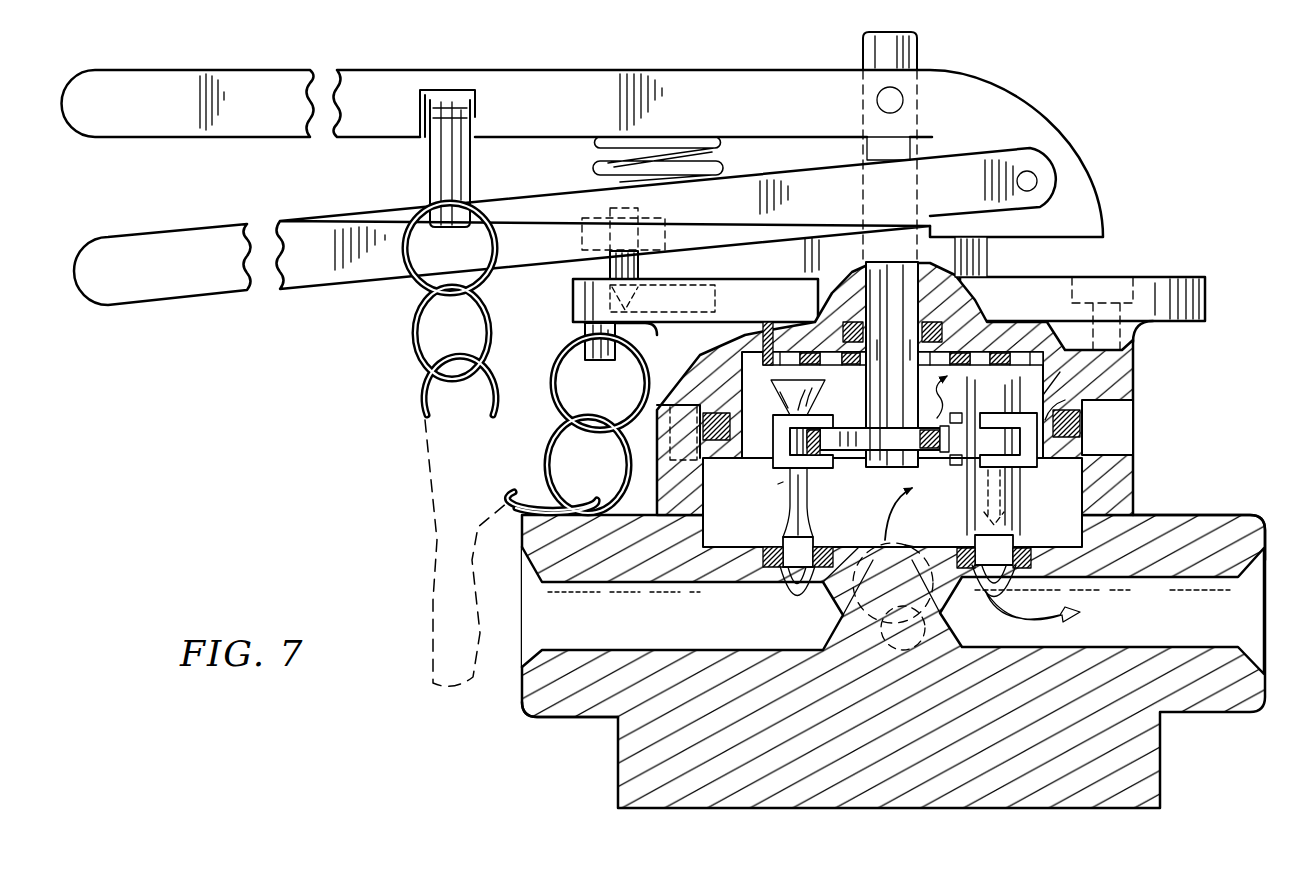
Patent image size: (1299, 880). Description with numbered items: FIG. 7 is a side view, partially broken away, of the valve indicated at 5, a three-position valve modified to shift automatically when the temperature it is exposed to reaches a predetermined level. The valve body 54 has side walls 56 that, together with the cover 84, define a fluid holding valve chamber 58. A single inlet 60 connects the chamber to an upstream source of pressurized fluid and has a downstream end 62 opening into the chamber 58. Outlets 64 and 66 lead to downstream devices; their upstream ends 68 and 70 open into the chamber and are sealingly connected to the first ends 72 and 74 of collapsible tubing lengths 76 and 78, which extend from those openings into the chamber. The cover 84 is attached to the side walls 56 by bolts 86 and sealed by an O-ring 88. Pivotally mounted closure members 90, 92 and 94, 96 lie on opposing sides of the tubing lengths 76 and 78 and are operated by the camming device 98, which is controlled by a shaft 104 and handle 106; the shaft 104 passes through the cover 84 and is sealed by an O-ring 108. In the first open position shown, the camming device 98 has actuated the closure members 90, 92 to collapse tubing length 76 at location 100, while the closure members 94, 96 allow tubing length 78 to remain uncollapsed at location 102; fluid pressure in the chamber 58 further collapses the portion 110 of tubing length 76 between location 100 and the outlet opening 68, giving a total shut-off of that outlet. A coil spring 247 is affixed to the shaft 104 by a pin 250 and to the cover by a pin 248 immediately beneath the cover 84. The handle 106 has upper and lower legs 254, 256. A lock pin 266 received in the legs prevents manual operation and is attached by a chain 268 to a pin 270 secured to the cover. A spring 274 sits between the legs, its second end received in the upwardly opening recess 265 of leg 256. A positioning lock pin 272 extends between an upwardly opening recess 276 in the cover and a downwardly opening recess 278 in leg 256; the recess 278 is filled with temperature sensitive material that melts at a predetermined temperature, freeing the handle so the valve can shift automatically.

The hydraulic assembly 5 is at (1252, 752).
The valve body 54 is at (618, 762).
The side walls 56 is at (1125, 470).
The valve chamber 58 is at (873, 470).
The inlet 60 is at (925, 645).
The downstream end 62 is at (905, 545).
The outlet 64 is at (554, 715).
The outlet 66 is at (1222, 517).
The upstream end 68 is at (795, 577).
The upstream end 70 is at (975, 588).
The first end 72 is at (830, 552).
The first end 74 is at (1028, 548).
The collapsible tubing length 76 is at (783, 527).
The collapsible tubing length 78 is at (1020, 502).
The cover 84 is at (1040, 280).
The bolts 86 is at (1126, 280).
The O-ring 88 is at (1082, 425).
The closure member 90 is at (808, 466).
The closure member 92 is at (774, 463).
The closure member 94 is at (945, 458).
The closure member 96 is at (1068, 398).
The camming device 98 is at (866, 487).
The location 100 is at (785, 437).
The location 102 is at (1028, 465).
The shaft 104 is at (917, 48).
The handle 106 is at (226, 58).
The O-ring 108 is at (962, 312).
The portion 110 is at (778, 484).
The coil spring 247 is at (1045, 360).
The pin 248 is at (752, 324).
The pin 250 is at (876, 340).
The upper leg 254 is at (180, 130).
The lower leg 256 is at (196, 289).
The upwardly opening recess 265 is at (478, 88).
The lock pin 266 is at (470, 165).
The chain 268 is at (494, 400).
The pin 270 is at (584, 337).
The positioning lock pin 272 is at (640, 264).
The spring 274 is at (716, 163).
The upwardly opening recess 276 is at (612, 300).
The downwardly opening recess 278 is at (665, 205).